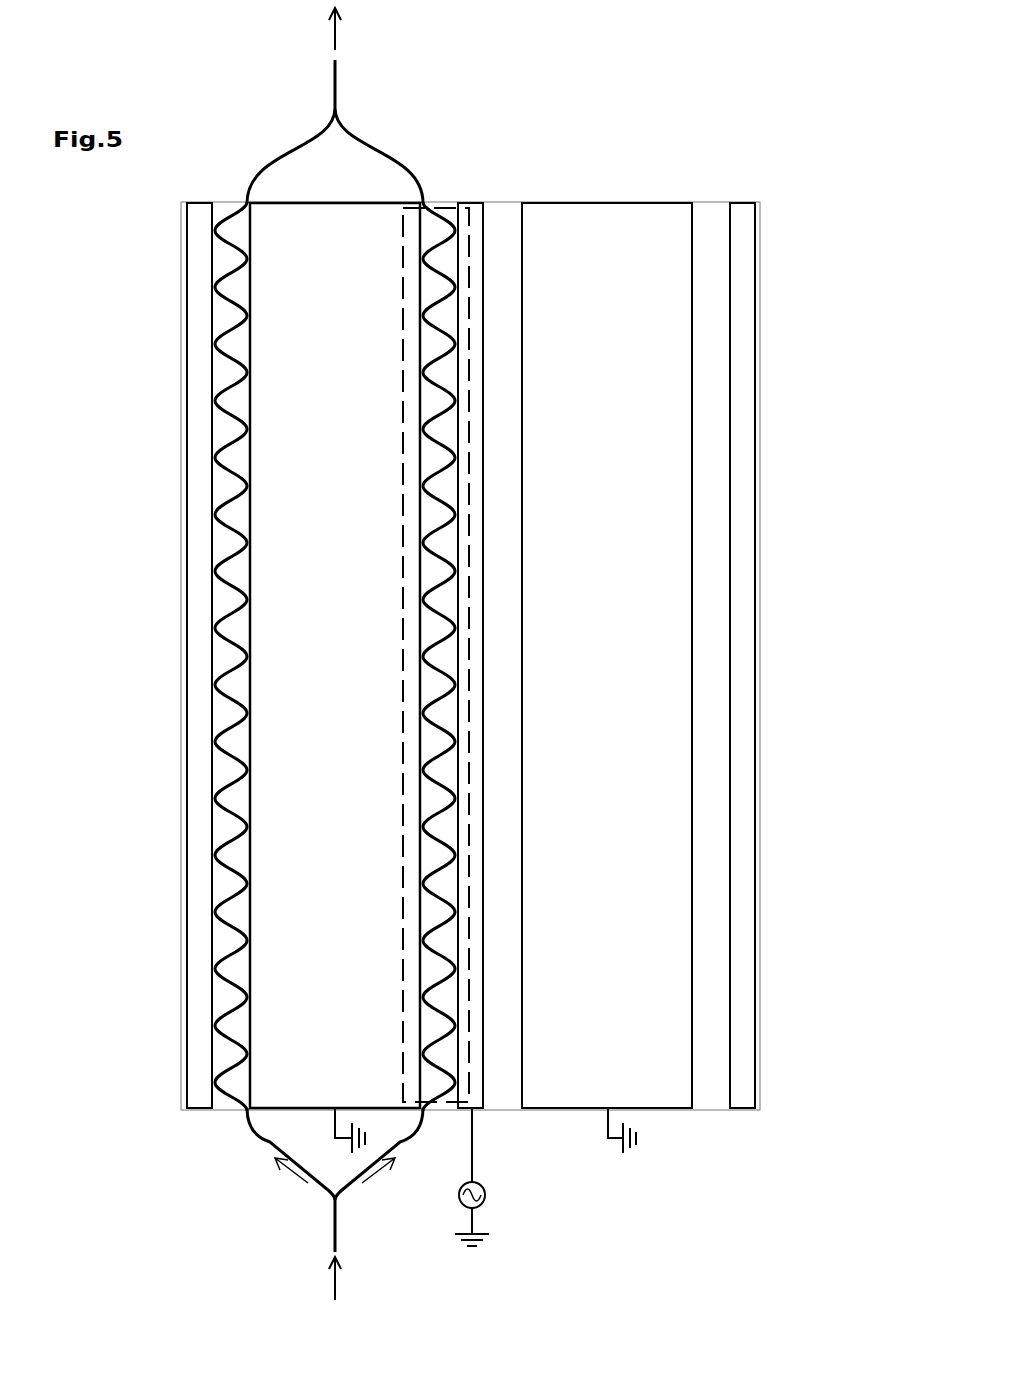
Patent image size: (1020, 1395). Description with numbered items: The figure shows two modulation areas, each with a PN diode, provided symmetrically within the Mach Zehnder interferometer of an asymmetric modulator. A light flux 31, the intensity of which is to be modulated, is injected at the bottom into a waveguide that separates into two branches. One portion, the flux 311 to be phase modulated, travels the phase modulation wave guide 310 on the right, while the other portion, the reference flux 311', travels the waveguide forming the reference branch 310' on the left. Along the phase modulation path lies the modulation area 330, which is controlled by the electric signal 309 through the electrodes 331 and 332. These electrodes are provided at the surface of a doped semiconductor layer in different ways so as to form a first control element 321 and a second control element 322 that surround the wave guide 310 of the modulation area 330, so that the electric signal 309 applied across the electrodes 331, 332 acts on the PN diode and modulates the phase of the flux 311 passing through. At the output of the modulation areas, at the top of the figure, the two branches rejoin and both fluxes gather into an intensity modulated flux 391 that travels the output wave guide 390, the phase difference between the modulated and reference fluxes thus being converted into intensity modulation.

The light flux 31 is at (333, 1260).
The electric signal 309 is at (486, 1197).
The phase modulation wave guide 310 is at (393, 1157).
The reference branch 310' is at (266, 1154).
The flux to be phase modulated 311 is at (384, 1207).
The reference flux 311' is at (269, 1201).
The first control element 321 is at (433, 230).
The second control element 322 is at (445, 213).
The modulation area 330 is at (473, 245).
The electrode 331 is at (322, 1090).
The electrode 332 is at (476, 1100).
The output wave guide 390 is at (338, 90).
The intensity modulated flux 391 is at (330, 35).